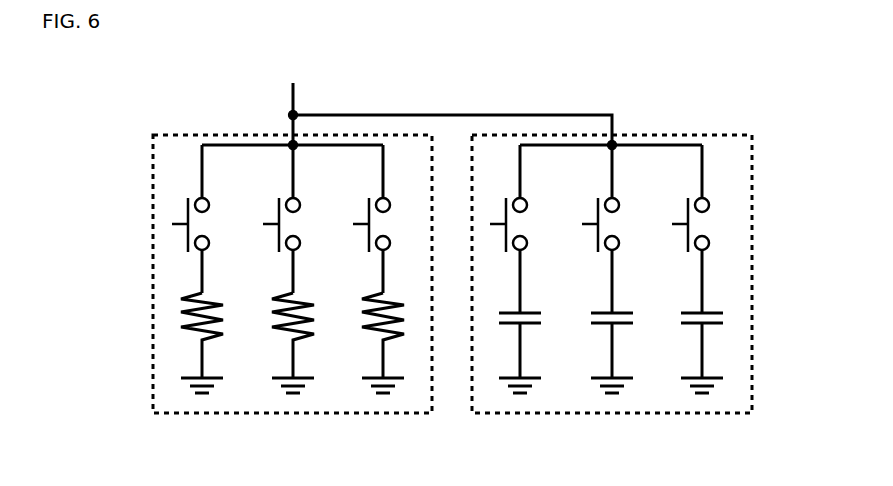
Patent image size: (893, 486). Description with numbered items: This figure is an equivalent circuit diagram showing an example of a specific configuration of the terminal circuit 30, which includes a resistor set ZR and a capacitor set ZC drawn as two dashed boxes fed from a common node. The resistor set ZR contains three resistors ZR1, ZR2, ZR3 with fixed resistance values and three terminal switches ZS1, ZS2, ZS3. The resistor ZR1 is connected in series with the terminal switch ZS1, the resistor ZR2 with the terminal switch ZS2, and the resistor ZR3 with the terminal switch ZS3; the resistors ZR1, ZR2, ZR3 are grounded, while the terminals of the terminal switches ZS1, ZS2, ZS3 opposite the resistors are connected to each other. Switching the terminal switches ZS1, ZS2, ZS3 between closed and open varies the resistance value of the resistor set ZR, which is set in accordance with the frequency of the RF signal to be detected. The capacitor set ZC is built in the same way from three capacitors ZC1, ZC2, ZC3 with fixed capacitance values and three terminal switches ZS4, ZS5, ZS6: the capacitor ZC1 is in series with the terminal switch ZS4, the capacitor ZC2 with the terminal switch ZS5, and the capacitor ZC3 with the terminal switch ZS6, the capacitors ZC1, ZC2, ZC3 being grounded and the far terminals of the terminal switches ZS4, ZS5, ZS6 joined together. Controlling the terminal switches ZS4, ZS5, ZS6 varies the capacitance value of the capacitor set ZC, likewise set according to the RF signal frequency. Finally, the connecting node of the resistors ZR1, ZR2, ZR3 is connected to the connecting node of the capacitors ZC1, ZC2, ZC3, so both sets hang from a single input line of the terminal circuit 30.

The terminal circuit 30 is at (597, 84).
The resistor set ZR is at (173, 415).
The capacitor set ZC is at (492, 415).
The terminal switch ZS1 is at (187, 219).
The terminal switch ZS2 is at (277, 219).
The terminal switch ZS3 is at (367, 219).
The terminal switch ZS4 is at (504, 229).
The terminal switch ZS5 is at (595, 229).
The terminal switch ZS6 is at (685, 229).
The resistor ZR1 is at (194, 343).
The resistor ZR2 is at (284, 343).
The resistor ZR3 is at (374, 343).
The capacitor ZC1 is at (511, 353).
The capacitor ZC2 is at (602, 353).
The capacitor ZC3 is at (692, 353).